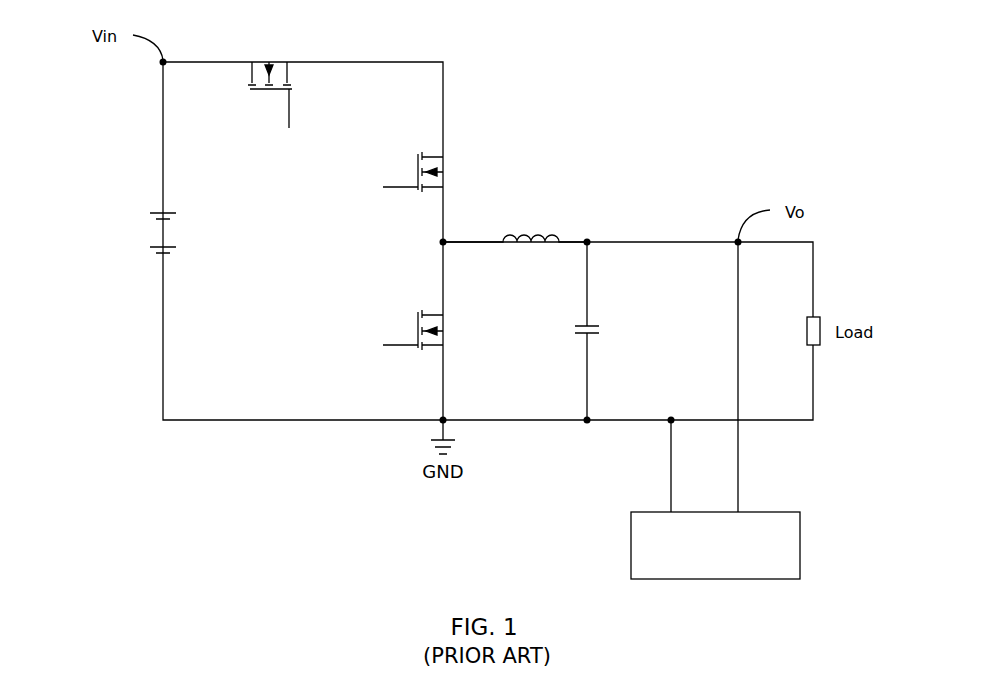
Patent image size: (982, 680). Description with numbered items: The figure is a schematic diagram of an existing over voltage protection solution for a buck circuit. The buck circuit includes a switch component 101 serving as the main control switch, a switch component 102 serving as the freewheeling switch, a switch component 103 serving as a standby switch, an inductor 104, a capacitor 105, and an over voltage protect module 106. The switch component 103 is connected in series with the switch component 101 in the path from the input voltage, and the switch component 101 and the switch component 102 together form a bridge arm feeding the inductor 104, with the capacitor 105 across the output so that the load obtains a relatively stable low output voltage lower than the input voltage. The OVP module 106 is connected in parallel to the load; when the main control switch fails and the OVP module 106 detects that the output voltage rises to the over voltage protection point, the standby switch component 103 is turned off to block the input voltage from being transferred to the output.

The switch component 101 is at (395, 183).
The switch component 102 is at (393, 343).
The switch component 103 is at (290, 118).
The inductor 104 is at (543, 225).
The capacitor 105 is at (598, 318).
The over voltage protect (OVP) module 106 is at (780, 508).